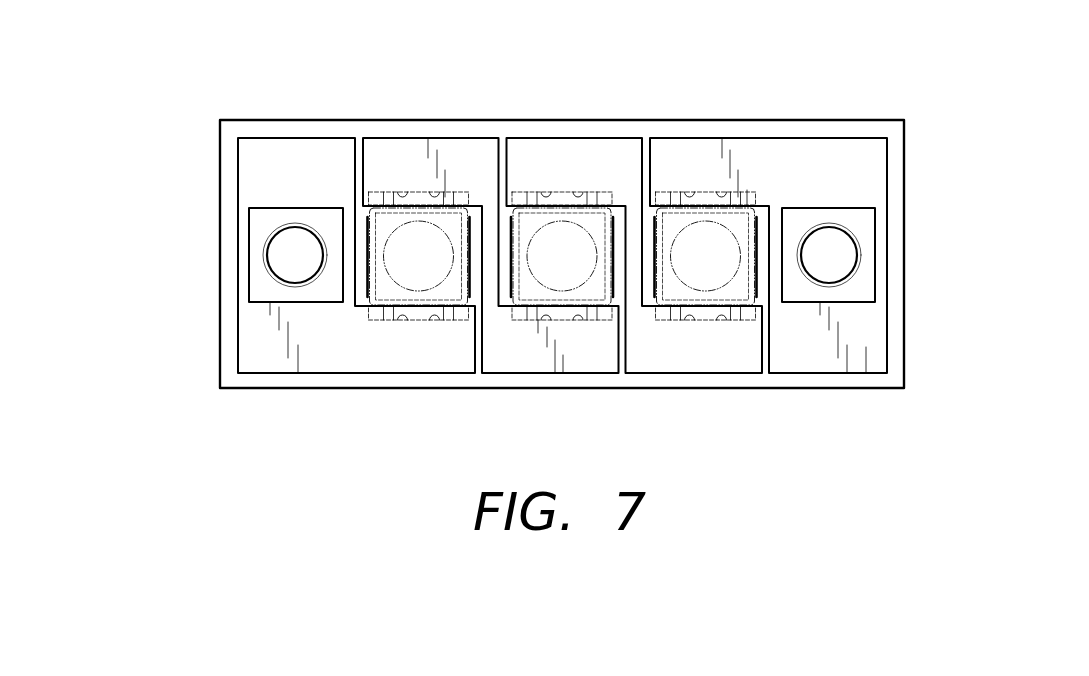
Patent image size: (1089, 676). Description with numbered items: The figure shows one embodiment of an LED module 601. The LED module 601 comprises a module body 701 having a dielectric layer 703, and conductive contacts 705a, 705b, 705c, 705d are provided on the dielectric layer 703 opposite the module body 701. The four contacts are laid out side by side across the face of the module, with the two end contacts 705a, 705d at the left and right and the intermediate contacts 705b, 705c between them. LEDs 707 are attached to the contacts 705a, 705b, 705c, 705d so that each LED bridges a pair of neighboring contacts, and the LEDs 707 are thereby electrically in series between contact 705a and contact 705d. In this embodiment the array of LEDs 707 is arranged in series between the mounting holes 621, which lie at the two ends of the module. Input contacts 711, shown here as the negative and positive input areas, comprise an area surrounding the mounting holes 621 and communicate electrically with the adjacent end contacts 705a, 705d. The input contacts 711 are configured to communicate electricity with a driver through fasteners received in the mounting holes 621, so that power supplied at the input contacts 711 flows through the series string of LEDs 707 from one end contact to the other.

The LED module 601 is at (597, 246).
The module body 701 is at (286, 120).
The dielectric layer 703 is at (562, 257).
The conductive contact 705a is at (408, 353).
The conductive contact 705b is at (585, 347).
The conductive contact 705c is at (734, 347).
The conductive contact 705d is at (866, 347).
The LEDs 707 is at (413, 242).
The input contacts 711 is at (265, 220).
The mounting holes 621 is at (293, 245).